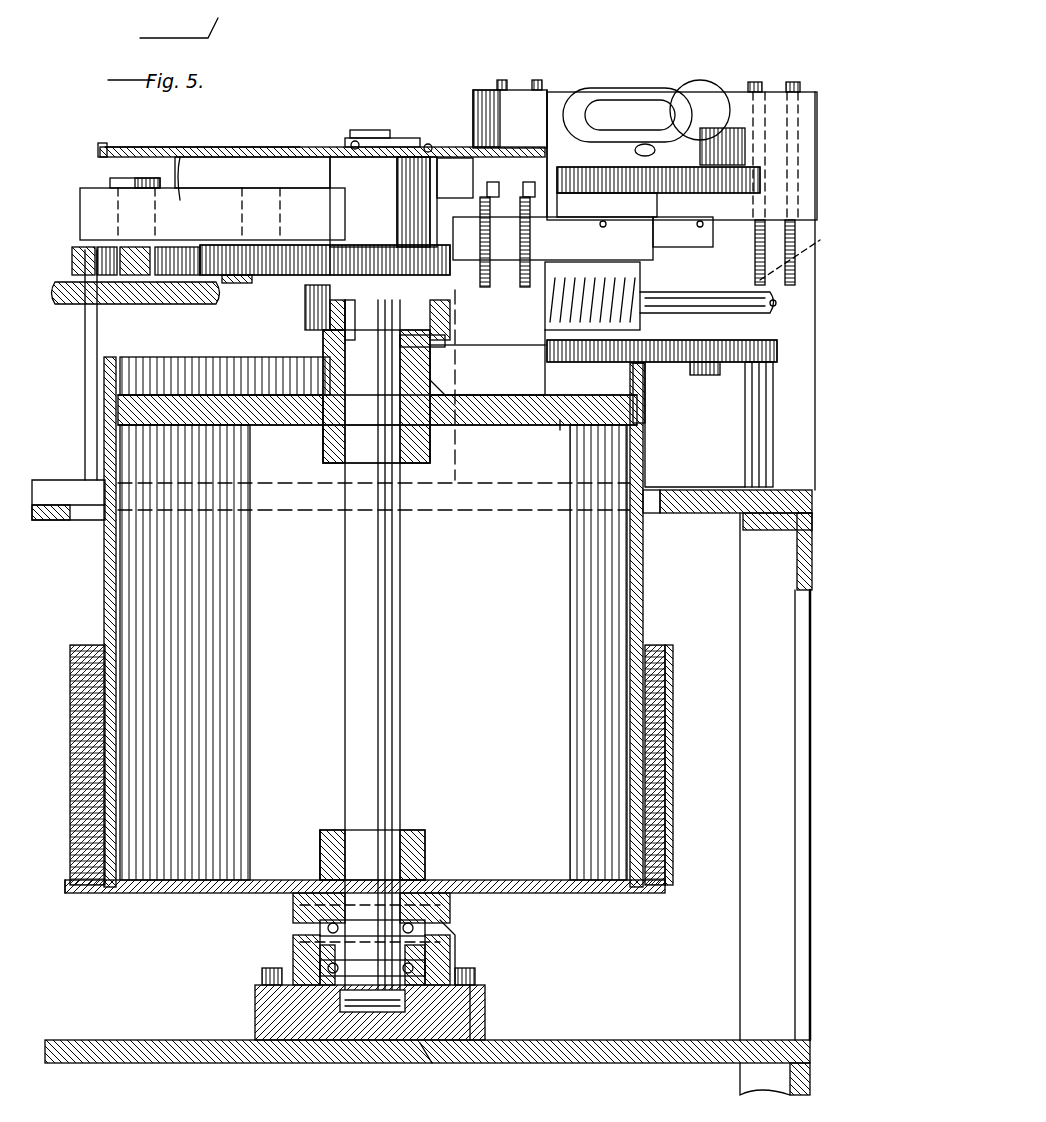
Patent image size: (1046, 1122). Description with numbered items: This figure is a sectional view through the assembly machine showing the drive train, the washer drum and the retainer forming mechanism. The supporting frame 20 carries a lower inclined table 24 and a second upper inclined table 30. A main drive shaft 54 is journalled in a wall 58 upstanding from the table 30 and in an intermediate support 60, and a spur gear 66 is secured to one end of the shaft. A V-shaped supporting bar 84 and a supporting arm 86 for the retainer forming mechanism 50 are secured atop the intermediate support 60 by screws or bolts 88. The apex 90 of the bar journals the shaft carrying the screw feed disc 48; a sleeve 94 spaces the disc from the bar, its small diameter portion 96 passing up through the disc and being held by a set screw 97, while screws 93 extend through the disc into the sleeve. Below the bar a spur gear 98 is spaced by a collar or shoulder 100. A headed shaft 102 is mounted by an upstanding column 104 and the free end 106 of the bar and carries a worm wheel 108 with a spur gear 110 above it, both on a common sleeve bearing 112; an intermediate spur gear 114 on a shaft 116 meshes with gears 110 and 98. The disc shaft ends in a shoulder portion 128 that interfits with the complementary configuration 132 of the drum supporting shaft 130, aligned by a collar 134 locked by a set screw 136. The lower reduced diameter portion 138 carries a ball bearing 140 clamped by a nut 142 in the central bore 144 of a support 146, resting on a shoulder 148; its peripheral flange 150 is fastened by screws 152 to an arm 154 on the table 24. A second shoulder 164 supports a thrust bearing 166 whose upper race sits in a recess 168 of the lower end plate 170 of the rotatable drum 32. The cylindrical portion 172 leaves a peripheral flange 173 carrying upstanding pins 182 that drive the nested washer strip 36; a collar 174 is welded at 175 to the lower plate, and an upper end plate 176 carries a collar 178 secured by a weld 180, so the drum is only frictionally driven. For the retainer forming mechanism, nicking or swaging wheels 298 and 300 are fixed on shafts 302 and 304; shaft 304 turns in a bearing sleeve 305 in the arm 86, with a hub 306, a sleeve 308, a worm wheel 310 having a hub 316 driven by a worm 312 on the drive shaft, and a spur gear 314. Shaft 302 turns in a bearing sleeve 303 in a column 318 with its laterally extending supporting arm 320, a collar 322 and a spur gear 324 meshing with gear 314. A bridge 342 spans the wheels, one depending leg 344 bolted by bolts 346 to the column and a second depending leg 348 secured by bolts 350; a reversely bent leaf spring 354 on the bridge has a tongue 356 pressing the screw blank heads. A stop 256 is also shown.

The supporting frame 20 is at (786, 640).
The lower inclined table 24 is at (680, 1040).
The second upper inclined table 30 is at (664, 482).
The rotatable drum 32 is at (648, 600).
The nested washer strip 36 is at (668, 805).
The screw feed disc 48 is at (243, 147).
The retainer forming mechanism 50 is at (722, 108).
The main drive shaft 54 is at (776, 305).
The upstanding wall 58 is at (285, 380).
The intermediate support 60 is at (458, 495).
The spur gear 66 is at (312, 318).
The V-shaped supporting bar 84 is at (455, 178).
The supporting arm 86 is at (555, 215).
The screws or bolts 88 is at (493, 188).
The apex 90 is at (388, 210).
The screws 93 is at (432, 147).
The sleeve 94 is at (312, 184).
The small diameter portion 96 is at (352, 130).
The set screw 97 is at (410, 148).
The spur gear 98 is at (392, 143).
The collar or shoulder 100 is at (340, 258).
The headed shaft 102 is at (110, 183).
The upstanding column 104 is at (88, 352).
The free end 106 is at (150, 139).
The worm wheel 108 is at (68, 300).
The spur gear 110 is at (73, 247).
The common sleeve bearing 112 is at (155, 265).
The intermediate spur gear 114 is at (250, 283).
The shaft 116 is at (250, 195).
The shoulder portion 128 is at (448, 318).
The drum supporting shaft 130 is at (355, 563).
The complementary configuration 132 is at (376, 396).
The collar 134 is at (440, 352).
The set screw 136 is at (330, 355).
The reduced diameter portion 138 is at (400, 962).
The ball bearing 140 is at (362, 970).
The nut 142 is at (345, 1012).
The central bore 144 is at (292, 945).
The support 146 is at (292, 960).
The shoulder 148 is at (490, 1003).
The peripheral flange 150 is at (255, 1002).
The screws 152 is at (478, 980).
The arm 154 is at (432, 1045).
The second shoulder 164 is at (455, 930).
The thrust bearing 166 is at (320, 926).
The recess 168 is at (428, 905).
The lower end plate 170 is at (145, 893).
The cylindrical portion 172 is at (104, 572).
The peripheral flange 173 is at (66, 896).
The collar 174 is at (425, 832).
The weld 175 is at (318, 876).
The upper end plate 176 is at (520, 425).
The collar 178 is at (432, 447).
The weld 180 is at (435, 395).
The upstanding pins 182 is at (658, 857).
The stop 256 is at (105, 143).
The nicking or swaging wheel 298 is at (745, 190).
The nicking or swaging wheel 300 is at (600, 163).
The shaft 302 is at (700, 378).
The bearing sleeve 303 is at (805, 244).
The shaft 304 is at (595, 455).
The bearing sleeve 305 is at (678, 221).
The hub 306 is at (603, 226).
The sleeve 308 is at (680, 268).
The worm wheel 310 is at (548, 298).
The worm 312 is at (548, 316).
The spur gear 314 is at (560, 425).
The hub 316 is at (545, 342).
The column 318 is at (780, 437).
The laterally extending supporting arm 320 is at (765, 250).
The collar 322 is at (740, 213).
The spur gear 324 is at (718, 375).
The bridge 342 is at (705, 100).
The depending leg 344 is at (745, 138).
The bolts 346 is at (765, 82).
The second depending leg 348 is at (535, 148).
The bolts 350 is at (538, 80).
The reversely bent leaf spring 354 is at (695, 125).
The tongue 356 is at (648, 145).